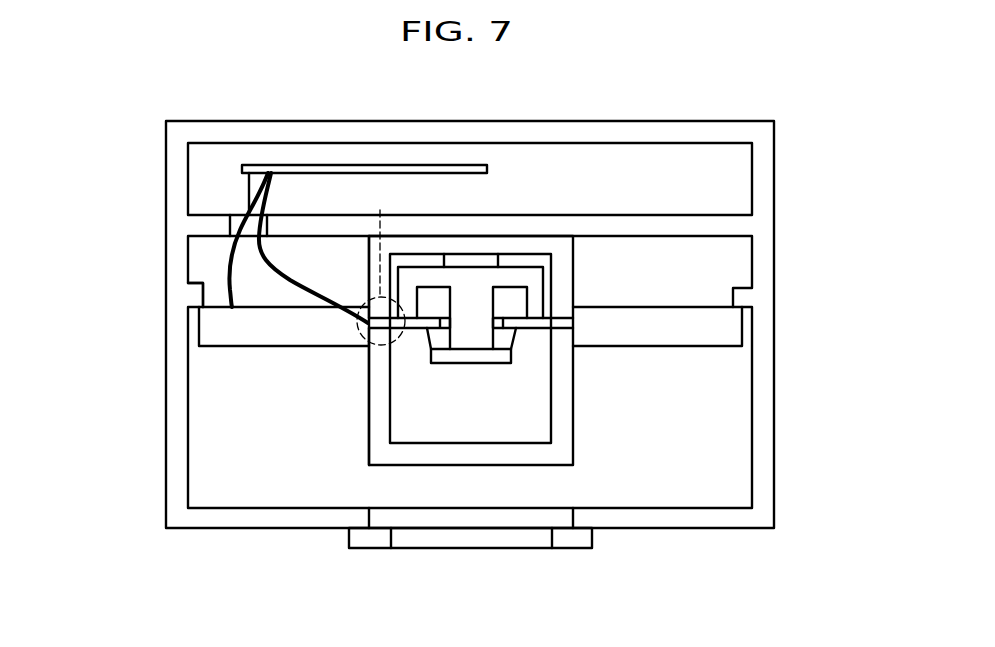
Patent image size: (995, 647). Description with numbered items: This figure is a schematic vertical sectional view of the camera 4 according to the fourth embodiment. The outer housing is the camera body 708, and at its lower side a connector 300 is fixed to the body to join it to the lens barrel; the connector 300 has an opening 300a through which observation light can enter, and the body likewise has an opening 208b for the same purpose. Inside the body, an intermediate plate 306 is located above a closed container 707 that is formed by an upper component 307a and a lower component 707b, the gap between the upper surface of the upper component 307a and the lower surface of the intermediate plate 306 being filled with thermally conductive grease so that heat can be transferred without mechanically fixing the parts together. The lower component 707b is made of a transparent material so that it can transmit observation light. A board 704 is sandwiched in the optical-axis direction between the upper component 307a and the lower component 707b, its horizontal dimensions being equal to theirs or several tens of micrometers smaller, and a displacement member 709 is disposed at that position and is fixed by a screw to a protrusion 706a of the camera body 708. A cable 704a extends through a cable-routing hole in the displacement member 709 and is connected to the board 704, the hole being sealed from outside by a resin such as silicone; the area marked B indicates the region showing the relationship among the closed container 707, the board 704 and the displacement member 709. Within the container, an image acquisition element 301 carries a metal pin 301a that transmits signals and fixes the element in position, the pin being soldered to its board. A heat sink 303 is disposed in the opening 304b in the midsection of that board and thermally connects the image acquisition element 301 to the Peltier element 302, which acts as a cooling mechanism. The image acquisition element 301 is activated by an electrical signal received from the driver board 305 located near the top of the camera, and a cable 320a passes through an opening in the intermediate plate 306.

The camera 4 is at (738, 106).
The driver board 305 is at (315, 164).
The cable 320a is at (262, 190).
The cable 704a is at (262, 190).
The area B is at (381, 263).
The Peltier element 302 is at (488, 255).
The intermediate plate 306 is at (727, 214).
The protrusion 706a is at (197, 295).
The heat sink 303 is at (533, 278).
The displacement member 709 is at (197, 325).
The closed container 707 is at (92, 350).
The upper component 307a is at (368, 280).
The lower component 707b is at (369, 358).
The board 704 is at (560, 322).
The opening 304b is at (517, 330).
The image acquisition element 301 is at (452, 364).
The metal pin 301a is at (513, 342).
The opening 208b is at (402, 510).
The opening 300a is at (517, 537).
The connector 300 is at (575, 549).
The camera body 708 is at (755, 530).